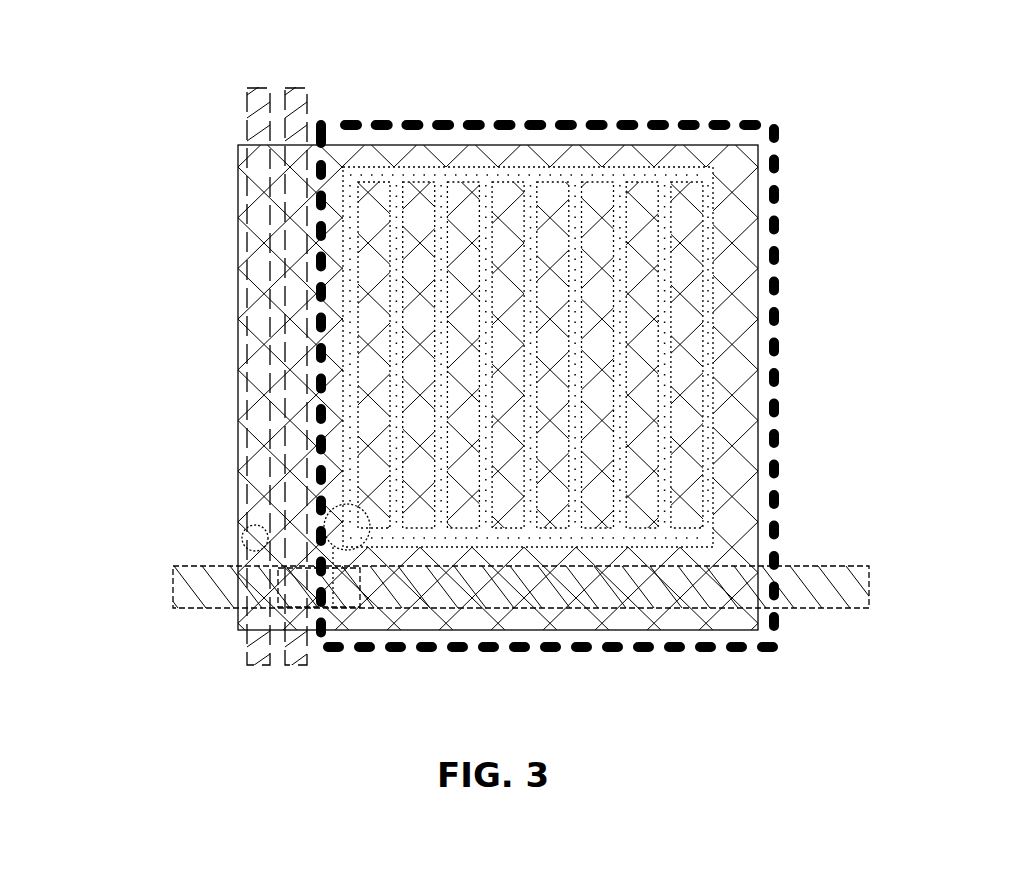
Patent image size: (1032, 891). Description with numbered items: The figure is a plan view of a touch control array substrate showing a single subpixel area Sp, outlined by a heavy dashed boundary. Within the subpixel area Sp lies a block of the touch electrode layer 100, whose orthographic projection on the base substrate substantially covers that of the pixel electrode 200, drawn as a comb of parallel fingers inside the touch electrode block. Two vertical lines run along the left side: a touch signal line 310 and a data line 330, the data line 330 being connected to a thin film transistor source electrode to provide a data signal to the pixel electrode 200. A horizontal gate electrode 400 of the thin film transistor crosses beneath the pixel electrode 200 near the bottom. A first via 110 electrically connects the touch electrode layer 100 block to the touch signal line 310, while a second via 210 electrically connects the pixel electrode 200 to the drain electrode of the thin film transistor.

The touch electrode layer 100 is at (730, 305).
The pixel electrode 200 is at (442, 190).
The second via 210 is at (338, 522).
The first via 110 is at (255, 538).
The touch signal line 310 is at (250, 127).
The data line 330 is at (287, 115).
The gate electrode 400 is at (810, 578).
The subpixel area Sp is at (697, 122).